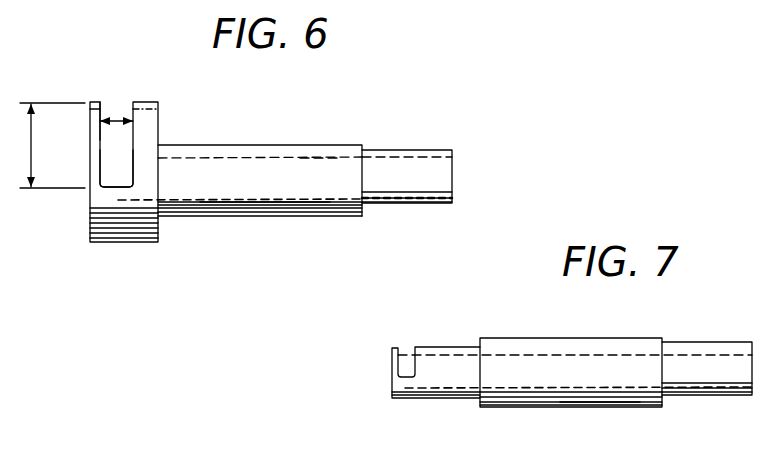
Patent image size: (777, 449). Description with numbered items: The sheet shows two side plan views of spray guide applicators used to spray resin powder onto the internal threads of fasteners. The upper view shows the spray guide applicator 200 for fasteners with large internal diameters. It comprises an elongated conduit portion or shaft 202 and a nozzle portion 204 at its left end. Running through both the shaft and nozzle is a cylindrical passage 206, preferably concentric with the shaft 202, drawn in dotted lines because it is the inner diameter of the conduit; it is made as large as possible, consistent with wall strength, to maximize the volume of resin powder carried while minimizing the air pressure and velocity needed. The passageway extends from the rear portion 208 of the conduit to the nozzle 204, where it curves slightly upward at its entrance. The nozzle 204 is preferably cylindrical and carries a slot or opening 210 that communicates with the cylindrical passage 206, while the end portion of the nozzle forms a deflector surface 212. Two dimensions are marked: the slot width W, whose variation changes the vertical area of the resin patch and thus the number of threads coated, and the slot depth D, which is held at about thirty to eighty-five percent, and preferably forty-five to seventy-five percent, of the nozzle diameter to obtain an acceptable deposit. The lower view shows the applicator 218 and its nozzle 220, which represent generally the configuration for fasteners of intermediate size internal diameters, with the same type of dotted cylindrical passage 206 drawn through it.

In FIG. 6, the spray guide applicator 200 is at (283, 121).
In FIG. 6, the conduit portion or shaft 202 is at (292, 218).
In FIG. 6, the nozzle portion 204 is at (143, 243).
In FIG. 6, the cylindrical passage 206 is at (312, 170).
In FIG. 7, the cylindrical passage 206 is at (615, 378).
In FIG. 6, the rear portion 208 is at (422, 148).
In FIG. 6, the slot or opening 210 is at (117, 160).
In FIG. 6, the deflector surface 212 is at (100, 125).
In FIG. 7, the applicator 218 is at (590, 302).
In FIG. 7, the nozzle 220 is at (405, 350).
In FIG. 6, the width of the slot W is at (113, 116).
In FIG. 6, the slot depth D is at (31, 152).